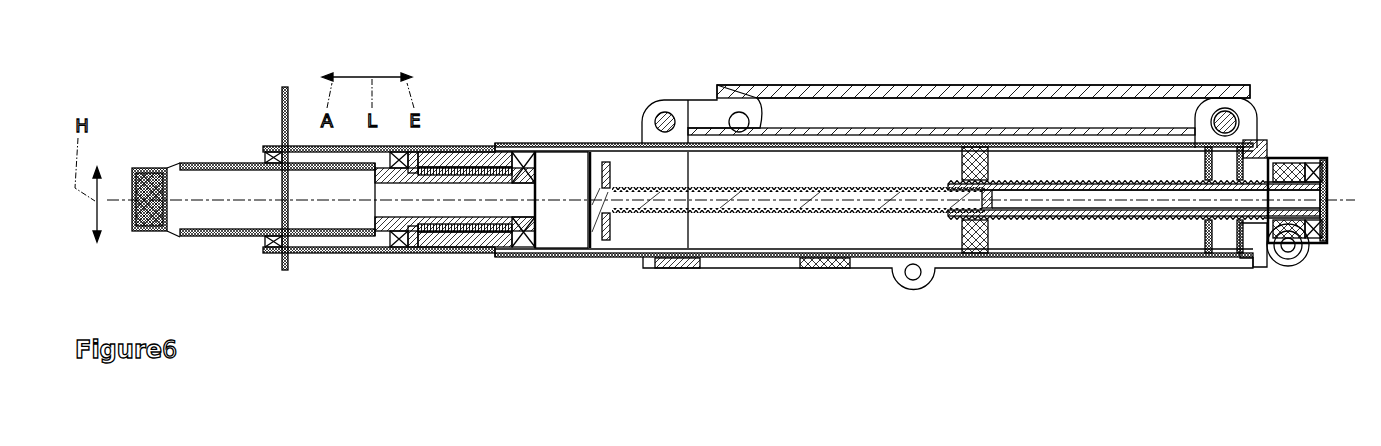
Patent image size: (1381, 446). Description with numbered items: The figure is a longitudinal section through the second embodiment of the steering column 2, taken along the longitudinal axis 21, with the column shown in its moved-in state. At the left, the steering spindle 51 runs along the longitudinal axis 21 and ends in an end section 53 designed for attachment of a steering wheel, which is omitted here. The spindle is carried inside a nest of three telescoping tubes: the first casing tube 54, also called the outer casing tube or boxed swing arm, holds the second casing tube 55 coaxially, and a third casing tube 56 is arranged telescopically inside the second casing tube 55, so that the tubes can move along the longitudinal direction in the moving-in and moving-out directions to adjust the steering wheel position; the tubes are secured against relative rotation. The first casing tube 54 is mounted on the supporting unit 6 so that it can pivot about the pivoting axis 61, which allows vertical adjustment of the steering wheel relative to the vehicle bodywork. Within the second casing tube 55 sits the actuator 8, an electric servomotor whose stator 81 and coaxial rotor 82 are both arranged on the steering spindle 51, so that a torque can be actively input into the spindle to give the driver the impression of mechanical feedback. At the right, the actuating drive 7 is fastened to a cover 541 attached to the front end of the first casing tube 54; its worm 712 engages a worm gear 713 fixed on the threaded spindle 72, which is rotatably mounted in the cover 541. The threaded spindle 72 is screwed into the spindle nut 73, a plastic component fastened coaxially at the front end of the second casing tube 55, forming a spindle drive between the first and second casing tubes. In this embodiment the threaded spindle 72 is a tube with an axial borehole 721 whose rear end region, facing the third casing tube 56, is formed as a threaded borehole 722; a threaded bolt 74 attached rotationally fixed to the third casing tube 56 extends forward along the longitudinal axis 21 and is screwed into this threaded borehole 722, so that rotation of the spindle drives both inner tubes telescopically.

The steering column 2 is at (560, 85).
The longitudinal axis 21 is at (110, 206).
The steering spindle 51 is at (220, 238).
The end section 53 is at (147, 222).
The first casing tube 54 is at (1097, 260).
The cover 541 is at (1254, 240).
The second casing tube 55 is at (734, 258).
The third casing tube 56 is at (323, 254).
The supporting unit 6 is at (964, 86).
The pivoting axis 61 is at (1230, 110).
The actuating drive 7 is at (1309, 190).
The worm 712 is at (1298, 252).
The worm gear 713 is at (1328, 232).
The threaded spindle 72 is at (1134, 246).
The axial borehole 721 is at (1192, 209).
The threaded borehole 722 is at (998, 204).
The spindle nut 73 is at (976, 224).
The threaded bolt 74 is at (760, 205).
The actuator 8 is at (462, 226).
The stator 81 is at (450, 254).
The rotor 82 is at (483, 254).